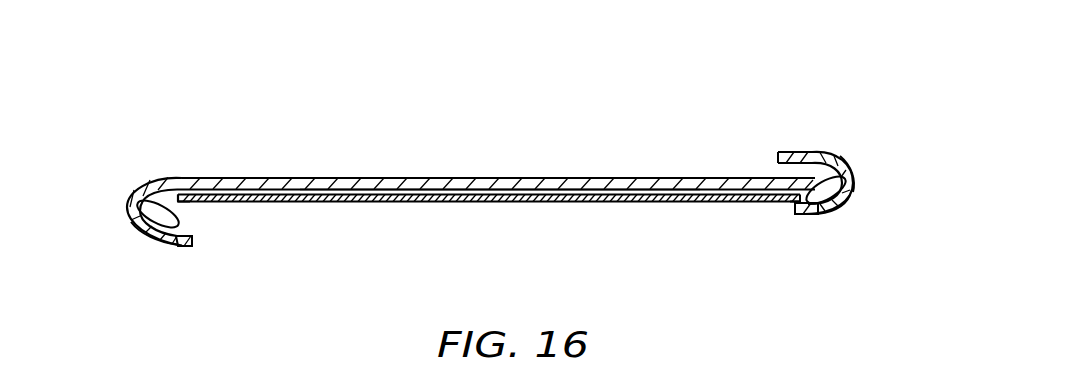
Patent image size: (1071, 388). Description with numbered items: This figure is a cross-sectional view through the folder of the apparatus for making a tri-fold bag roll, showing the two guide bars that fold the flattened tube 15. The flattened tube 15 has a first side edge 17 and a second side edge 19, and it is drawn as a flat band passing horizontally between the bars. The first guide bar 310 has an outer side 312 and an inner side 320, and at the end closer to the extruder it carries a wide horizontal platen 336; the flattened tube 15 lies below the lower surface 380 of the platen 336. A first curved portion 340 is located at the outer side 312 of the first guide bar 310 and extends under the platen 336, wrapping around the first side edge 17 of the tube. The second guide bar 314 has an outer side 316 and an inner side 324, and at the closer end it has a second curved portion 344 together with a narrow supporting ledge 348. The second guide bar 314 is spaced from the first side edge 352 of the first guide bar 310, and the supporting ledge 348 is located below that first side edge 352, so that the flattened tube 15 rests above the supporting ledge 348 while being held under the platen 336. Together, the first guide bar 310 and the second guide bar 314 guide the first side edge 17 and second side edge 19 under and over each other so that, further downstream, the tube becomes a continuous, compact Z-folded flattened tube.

The flattened tube 15 is at (358, 202).
The first side edge 17 is at (180, 203).
The second side edge 19 is at (803, 214).
The first guide bar 310 is at (150, 212).
The outer side 312 is at (128, 210).
The second guide bar 314 is at (795, 150).
The outer side 316 is at (857, 190).
The inner side 320 is at (178, 247).
The inner side 324 is at (816, 180).
The wide horizontal platen 336 is at (267, 178).
The first curved portion 340 is at (137, 230).
The second curved portion 344 is at (850, 198).
The narrow supporting ledge 348 is at (827, 214).
The first side edge of the first bar 352 is at (837, 217).
The lower surface 380 is at (463, 190).